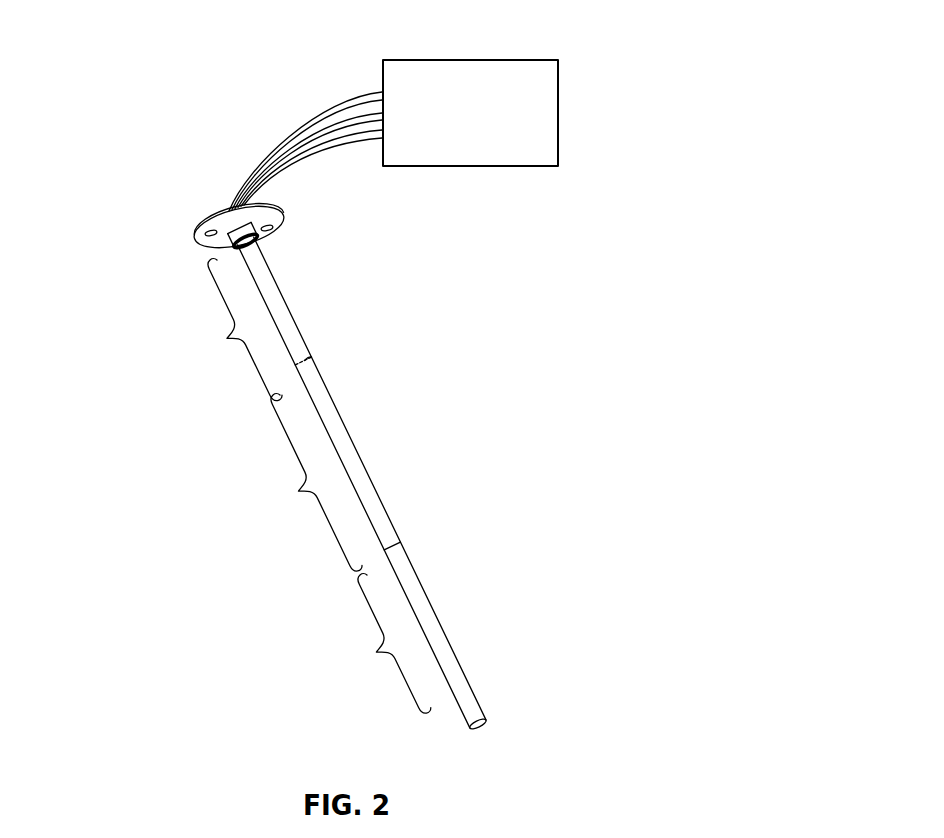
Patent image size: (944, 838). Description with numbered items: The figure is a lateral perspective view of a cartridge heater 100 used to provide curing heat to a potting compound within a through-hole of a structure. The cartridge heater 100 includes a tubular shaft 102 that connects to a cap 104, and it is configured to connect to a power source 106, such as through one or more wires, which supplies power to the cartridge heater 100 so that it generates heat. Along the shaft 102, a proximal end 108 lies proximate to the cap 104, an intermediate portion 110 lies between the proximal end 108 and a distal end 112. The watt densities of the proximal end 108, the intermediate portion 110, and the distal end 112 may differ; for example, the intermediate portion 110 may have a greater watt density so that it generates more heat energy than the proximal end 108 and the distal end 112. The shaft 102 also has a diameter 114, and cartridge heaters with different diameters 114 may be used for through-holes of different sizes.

The cartridge heater 100 is at (138, 193).
The tubular shaft 102 is at (372, 483).
The cap 104 is at (280, 213).
The power source 106 is at (558, 73).
The proximal end 108 is at (223, 340).
The intermediate portion 110 is at (300, 497).
The distal end 112 is at (380, 655).
The diameter 114 is at (311, 357).